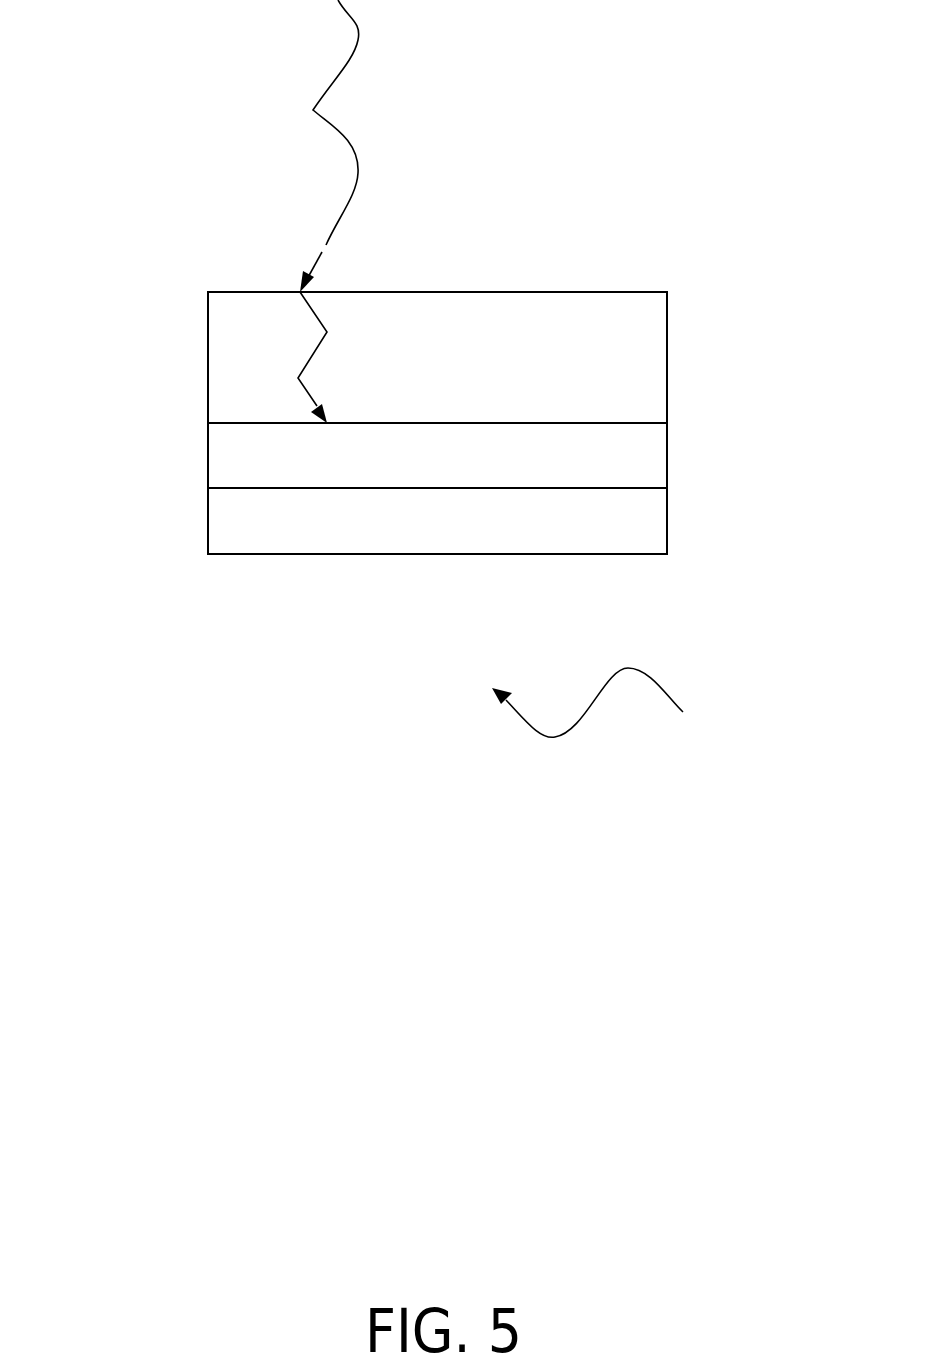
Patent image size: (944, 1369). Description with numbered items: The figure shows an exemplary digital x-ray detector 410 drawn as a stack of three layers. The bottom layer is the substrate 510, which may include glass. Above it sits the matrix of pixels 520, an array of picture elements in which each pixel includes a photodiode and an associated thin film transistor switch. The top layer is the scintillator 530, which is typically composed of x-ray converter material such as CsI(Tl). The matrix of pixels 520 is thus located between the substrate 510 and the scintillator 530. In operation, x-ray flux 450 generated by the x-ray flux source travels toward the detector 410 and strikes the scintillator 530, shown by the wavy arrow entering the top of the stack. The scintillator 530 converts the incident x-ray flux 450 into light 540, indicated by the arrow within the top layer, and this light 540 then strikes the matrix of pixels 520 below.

The detector 410 is at (621, 702).
The x-ray flux 450 is at (313, 110).
The substrate 510 is at (208, 507).
The matrix of picture elements (pixels) 520 is at (208, 440).
The scintillator 530 is at (208, 350).
The light 540 is at (327, 332).